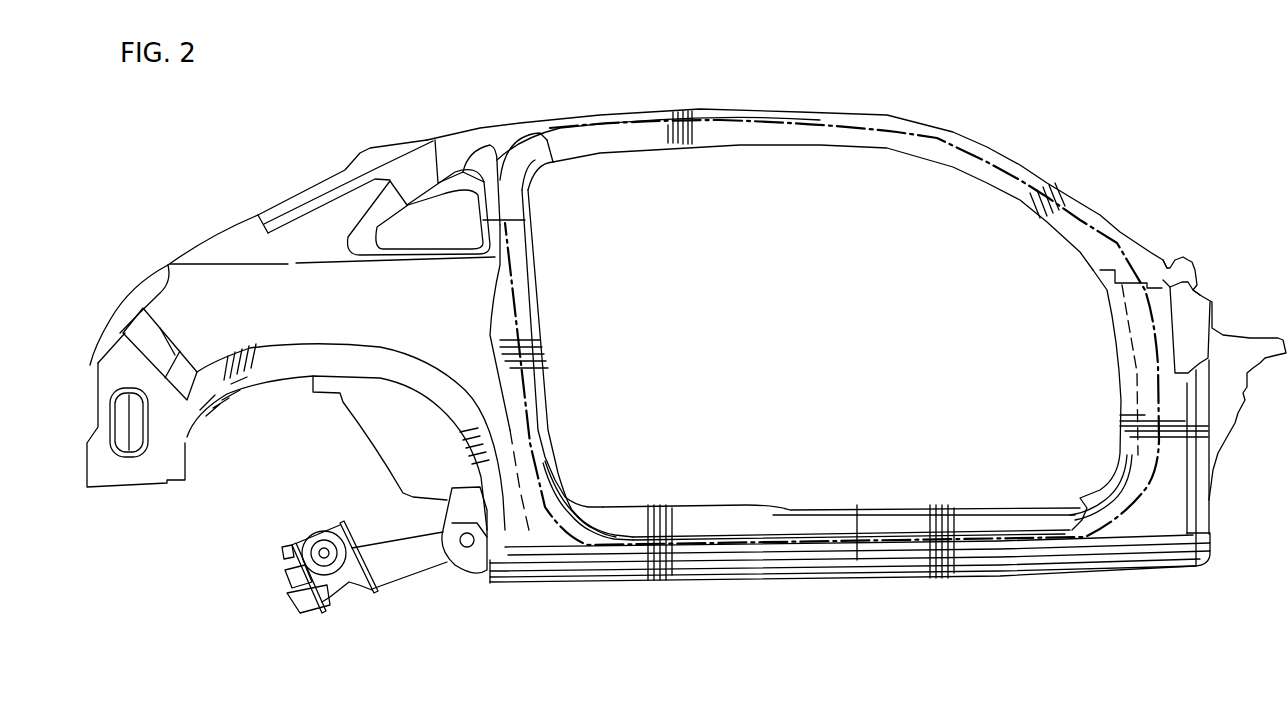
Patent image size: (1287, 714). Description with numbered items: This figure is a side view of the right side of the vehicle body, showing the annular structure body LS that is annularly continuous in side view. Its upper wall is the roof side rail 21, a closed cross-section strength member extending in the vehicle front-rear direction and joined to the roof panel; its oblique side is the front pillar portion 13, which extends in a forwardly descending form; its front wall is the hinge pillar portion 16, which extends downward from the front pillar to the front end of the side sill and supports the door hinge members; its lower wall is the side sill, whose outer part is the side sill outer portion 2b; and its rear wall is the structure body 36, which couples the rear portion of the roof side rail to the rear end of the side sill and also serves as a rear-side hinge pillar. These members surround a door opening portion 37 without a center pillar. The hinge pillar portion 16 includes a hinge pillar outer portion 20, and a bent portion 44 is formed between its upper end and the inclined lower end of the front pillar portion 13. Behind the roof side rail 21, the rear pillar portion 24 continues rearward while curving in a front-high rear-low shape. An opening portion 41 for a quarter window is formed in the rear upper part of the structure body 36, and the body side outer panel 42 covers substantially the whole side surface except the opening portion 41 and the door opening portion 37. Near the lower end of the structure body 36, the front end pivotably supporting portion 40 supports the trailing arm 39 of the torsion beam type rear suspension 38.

The side sill outer portion 2b is at (880, 552).
The front pillar portion 13 is at (1082, 200).
The hinge pillar portion 16 is at (1108, 395).
The hinge pillar outer portion 20 is at (1135, 458).
The roof side rail 21 is at (657, 110).
The rear pillar portion 24 is at (304, 194).
The structure body 36 is at (540, 325).
The door opening portion 37 is at (777, 155).
The torsion beam type rear suspension 38 is at (368, 535).
The trailing arm 39 is at (395, 566).
The front end pivotably supporting portion 40 is at (465, 555).
The opening portion 41 is at (447, 235).
The body side outer panel 42 is at (331, 313).
The bent portion 44 is at (1075, 262).
The annular structure body LS is at (953, 142).